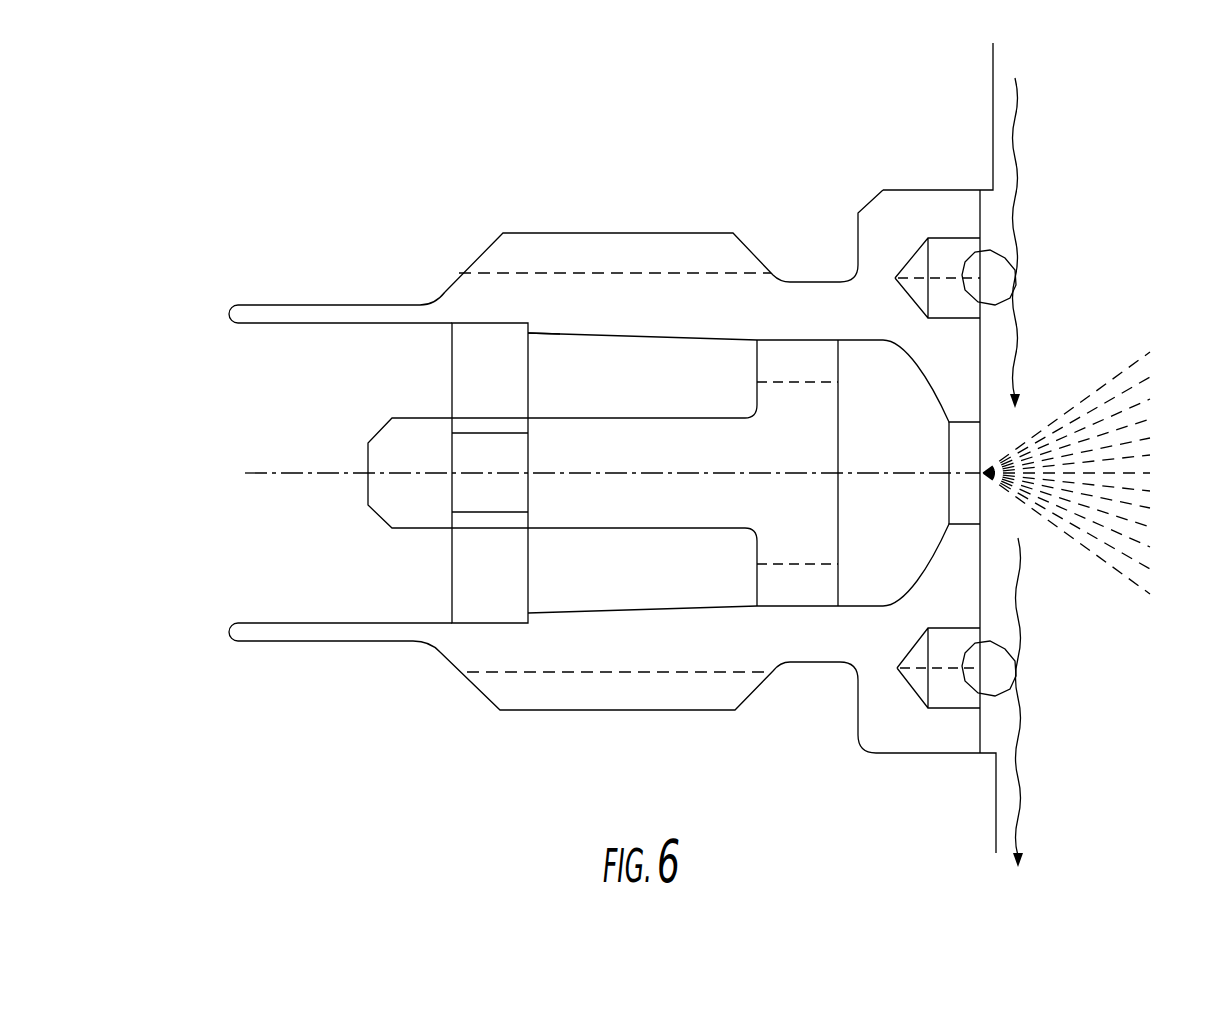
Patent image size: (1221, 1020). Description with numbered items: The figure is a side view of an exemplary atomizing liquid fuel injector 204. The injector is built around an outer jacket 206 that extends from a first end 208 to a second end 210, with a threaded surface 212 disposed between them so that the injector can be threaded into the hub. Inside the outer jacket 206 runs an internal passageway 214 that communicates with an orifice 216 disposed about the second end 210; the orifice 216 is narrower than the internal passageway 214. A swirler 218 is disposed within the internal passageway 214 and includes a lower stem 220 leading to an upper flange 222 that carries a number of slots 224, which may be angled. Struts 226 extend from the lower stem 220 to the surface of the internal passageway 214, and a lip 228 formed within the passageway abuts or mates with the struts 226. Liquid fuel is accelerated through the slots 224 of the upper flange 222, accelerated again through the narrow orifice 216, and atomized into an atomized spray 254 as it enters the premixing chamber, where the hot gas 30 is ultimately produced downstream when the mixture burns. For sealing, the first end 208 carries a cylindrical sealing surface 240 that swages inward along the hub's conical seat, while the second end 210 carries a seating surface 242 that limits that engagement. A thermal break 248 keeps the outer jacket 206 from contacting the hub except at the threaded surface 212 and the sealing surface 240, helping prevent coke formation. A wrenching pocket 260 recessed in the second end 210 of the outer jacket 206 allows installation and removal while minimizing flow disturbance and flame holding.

The hot gas 30 is at (1017, 213).
The liquid fuel injector 204 is at (853, 100).
The outer jacket 206 is at (920, 755).
The first end 208 is at (221, 666).
The second end 210 is at (945, 172).
The threaded surface 212 is at (615, 232).
The internal passageway 214 is at (643, 399).
The orifice 216 is at (970, 452).
The swirler 218 is at (628, 517).
The lower stem 220 is at (415, 503).
The upper flange 222 is at (812, 545).
The slots 224 is at (785, 587).
The struts 226 is at (463, 388).
The lip 228 is at (532, 333).
The cylindrical sealing surface 240 is at (317, 305).
The seating surface 242 is at (853, 240).
The thermal break 248 is at (421, 666).
The atomized spray 254 is at (1110, 372).
The wrenching pocket 260 is at (965, 243).